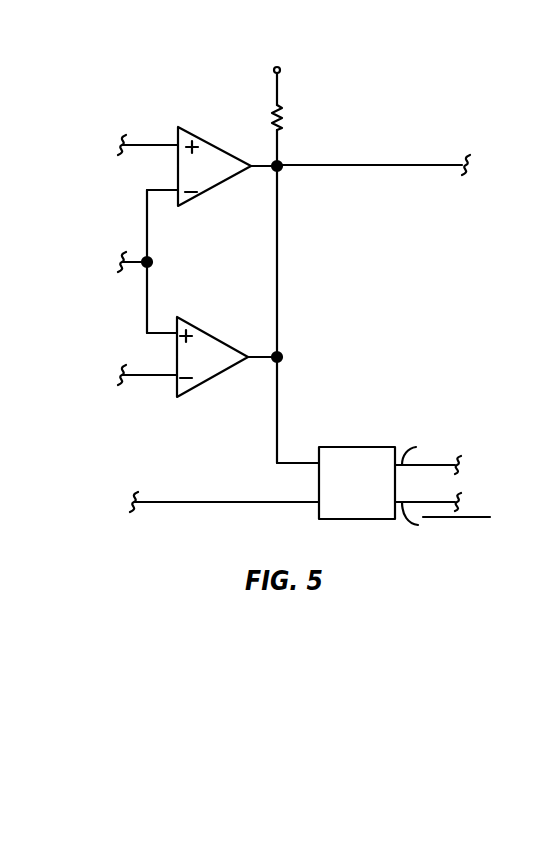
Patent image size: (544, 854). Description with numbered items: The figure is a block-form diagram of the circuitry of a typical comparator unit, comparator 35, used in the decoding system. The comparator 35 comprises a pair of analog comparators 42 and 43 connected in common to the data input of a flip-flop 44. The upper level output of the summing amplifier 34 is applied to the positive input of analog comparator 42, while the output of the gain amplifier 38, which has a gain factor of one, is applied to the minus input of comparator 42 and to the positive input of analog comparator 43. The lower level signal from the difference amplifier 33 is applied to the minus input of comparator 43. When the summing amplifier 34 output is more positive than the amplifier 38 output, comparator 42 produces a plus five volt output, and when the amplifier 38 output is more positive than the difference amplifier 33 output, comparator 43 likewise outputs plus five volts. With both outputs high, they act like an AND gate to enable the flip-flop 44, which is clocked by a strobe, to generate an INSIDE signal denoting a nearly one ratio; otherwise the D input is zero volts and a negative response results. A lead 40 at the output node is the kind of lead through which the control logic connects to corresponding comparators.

The comparator 35 is at (231, 98).
The analog comparator 42 is at (200, 139).
The analog comparator 43 is at (218, 340).
The flip-flop 44 is at (340, 447).
The lead 40 is at (388, 169).
The summing amplifier 34 is at (96, 150).
The gain amplifier 38 is at (77, 269).
The difference amplifier 33 is at (94, 382).